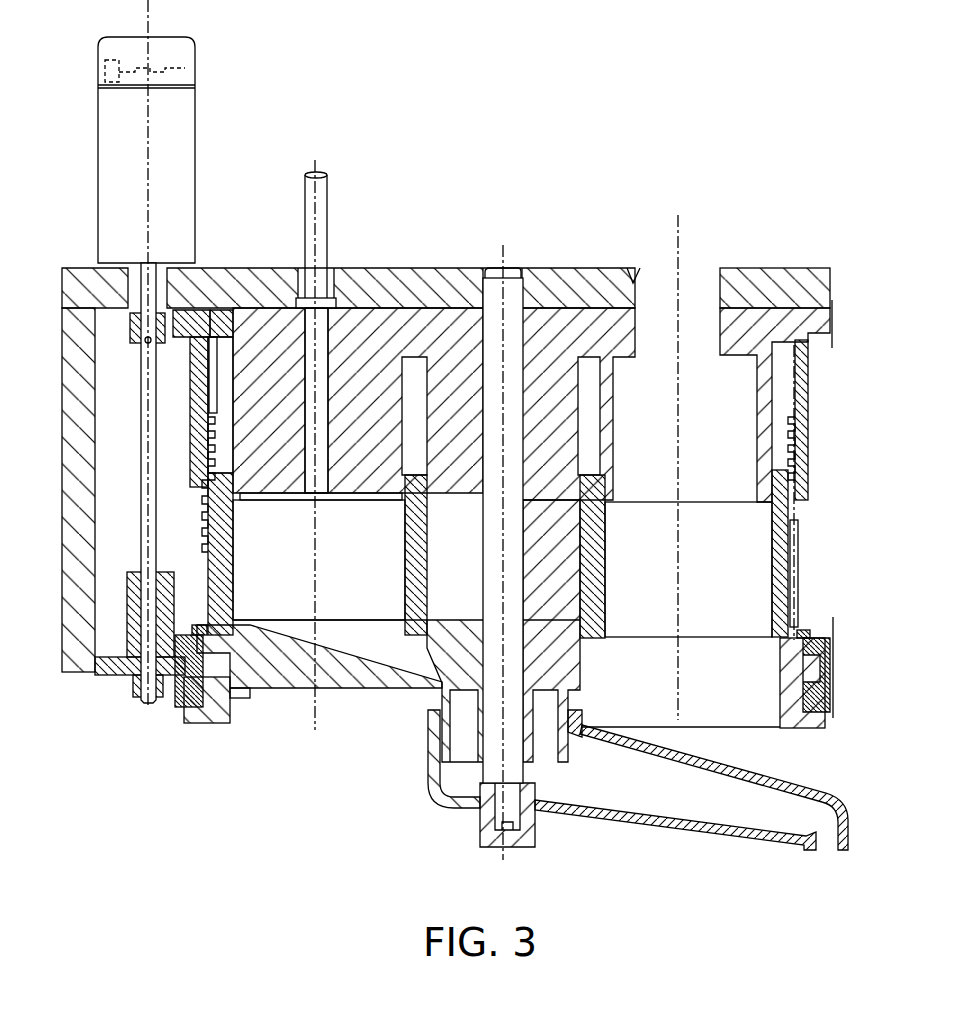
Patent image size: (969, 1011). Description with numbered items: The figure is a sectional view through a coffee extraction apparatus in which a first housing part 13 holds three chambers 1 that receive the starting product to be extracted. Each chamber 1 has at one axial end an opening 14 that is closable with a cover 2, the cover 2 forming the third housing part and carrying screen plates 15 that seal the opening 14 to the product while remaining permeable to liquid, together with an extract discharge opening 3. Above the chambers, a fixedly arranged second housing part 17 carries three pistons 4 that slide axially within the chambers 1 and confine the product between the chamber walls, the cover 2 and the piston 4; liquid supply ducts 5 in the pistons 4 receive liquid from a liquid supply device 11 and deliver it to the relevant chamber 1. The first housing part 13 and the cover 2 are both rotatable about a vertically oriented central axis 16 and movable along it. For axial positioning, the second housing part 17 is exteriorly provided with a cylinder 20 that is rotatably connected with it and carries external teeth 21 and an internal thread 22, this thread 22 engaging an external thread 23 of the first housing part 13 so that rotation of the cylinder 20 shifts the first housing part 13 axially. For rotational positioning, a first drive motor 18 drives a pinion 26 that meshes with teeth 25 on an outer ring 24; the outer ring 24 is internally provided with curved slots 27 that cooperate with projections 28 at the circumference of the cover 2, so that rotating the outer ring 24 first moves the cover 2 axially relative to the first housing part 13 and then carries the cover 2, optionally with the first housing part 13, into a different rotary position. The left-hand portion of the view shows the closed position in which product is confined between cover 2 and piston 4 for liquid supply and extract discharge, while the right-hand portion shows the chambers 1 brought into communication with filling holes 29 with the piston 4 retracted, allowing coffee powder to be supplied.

The chamber 1 is at (287, 566).
The cover 2 is at (285, 688).
The extract discharge opening 3 is at (420, 667).
The piston 4 is at (378, 350).
The liquid supply duct 5 is at (345, 315).
The liquid supply device 11 is at (328, 190).
The first housing part 13 is at (208, 592).
The opening 14 is at (330, 597).
The screen plate 15 is at (372, 627).
The central axis 16 is at (515, 300).
The second housing part 17 is at (415, 298).
The first drive motor 18 is at (190, 130).
The cylinder 20 is at (228, 310).
The teeth 21 is at (182, 310).
The thread 22 is at (208, 438).
The external thread 23 is at (217, 498).
The outer ring 24 is at (215, 725).
The teeth 25 is at (175, 705).
The pinion 26 is at (127, 587).
The curved slot 27 is at (807, 663).
The projection 28 is at (238, 713).
The filling hole 29 is at (645, 270).